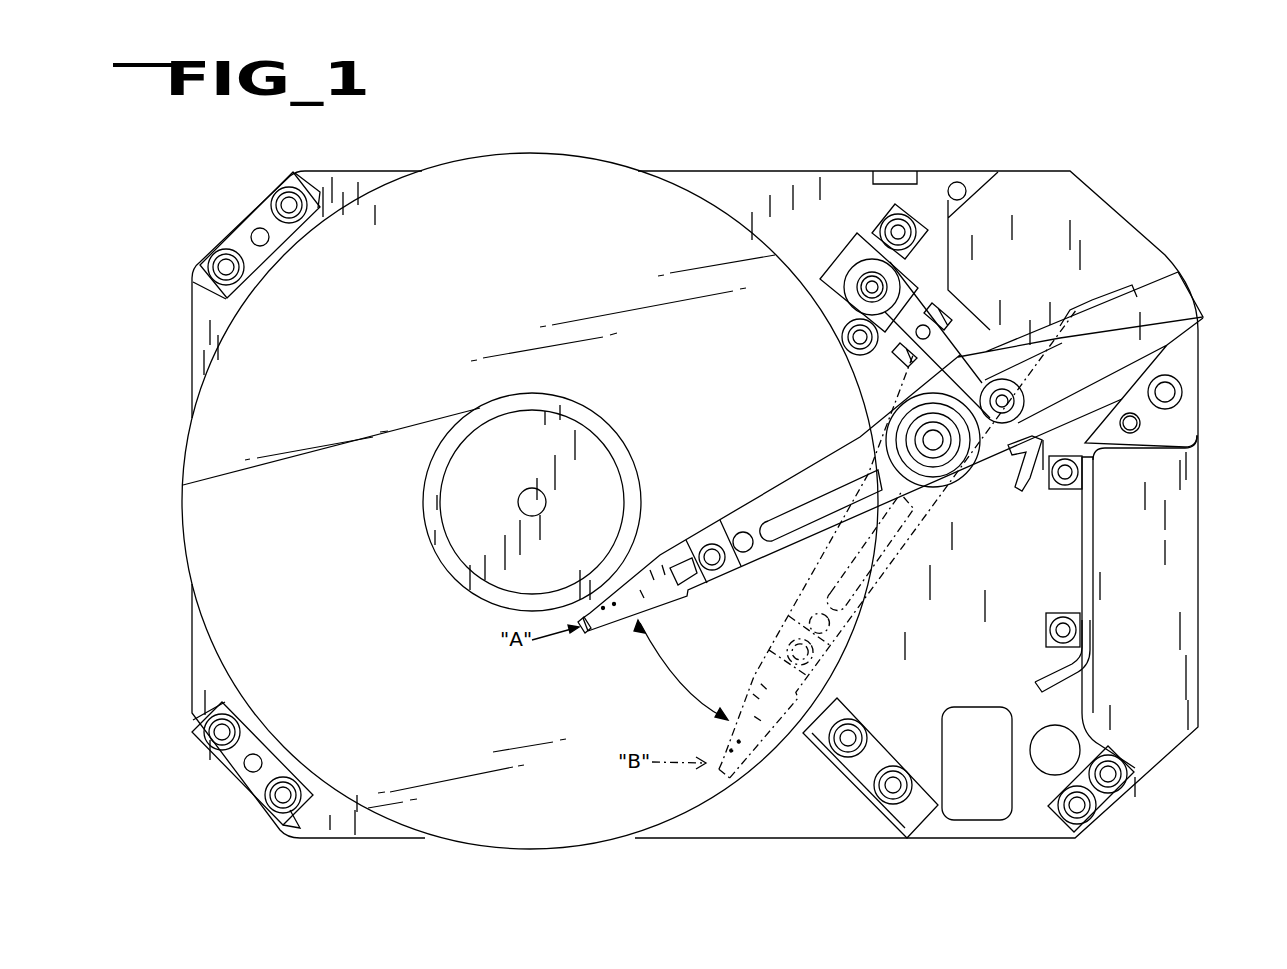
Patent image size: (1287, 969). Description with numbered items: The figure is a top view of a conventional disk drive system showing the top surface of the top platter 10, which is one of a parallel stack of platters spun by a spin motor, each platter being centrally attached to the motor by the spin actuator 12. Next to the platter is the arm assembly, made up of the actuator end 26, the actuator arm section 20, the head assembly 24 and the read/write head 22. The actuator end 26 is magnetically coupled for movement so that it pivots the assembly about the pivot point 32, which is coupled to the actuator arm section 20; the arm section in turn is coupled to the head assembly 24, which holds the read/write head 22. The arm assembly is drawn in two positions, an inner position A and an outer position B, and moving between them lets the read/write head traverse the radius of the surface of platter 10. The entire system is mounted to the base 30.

The top platter 10 is at (567, 182).
The spin actuator 12 is at (531, 500).
The actuator arm section 20 is at (781, 502).
The read/write head 22 is at (587, 634).
The head assembly 24 is at (676, 550).
The actuator end 26 is at (1165, 312).
The base 30 is at (990, 840).
The pivot point 32 is at (940, 447).